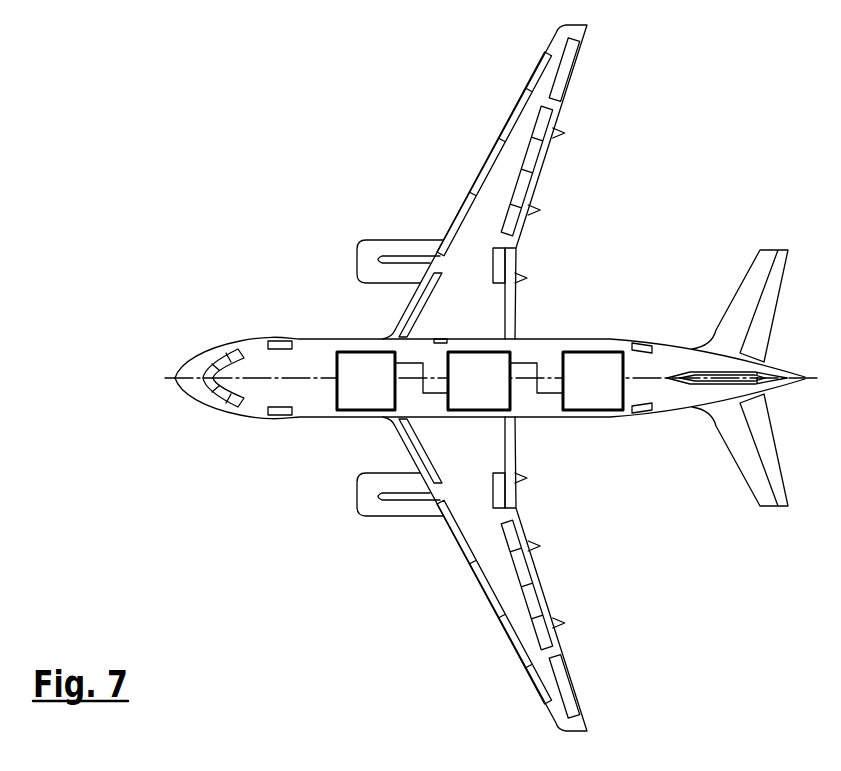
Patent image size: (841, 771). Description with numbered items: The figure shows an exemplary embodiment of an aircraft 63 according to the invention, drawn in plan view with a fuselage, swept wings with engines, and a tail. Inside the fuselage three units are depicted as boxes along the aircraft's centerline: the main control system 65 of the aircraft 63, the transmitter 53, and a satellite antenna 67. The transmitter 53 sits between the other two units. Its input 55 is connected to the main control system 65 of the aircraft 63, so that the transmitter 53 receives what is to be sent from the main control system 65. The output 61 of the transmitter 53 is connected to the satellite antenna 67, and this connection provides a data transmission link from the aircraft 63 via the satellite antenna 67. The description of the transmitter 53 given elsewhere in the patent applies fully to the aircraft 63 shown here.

The transmitter 53 is at (479, 381).
The input 55 is at (450, 410).
The output 61 is at (511, 352).
The aircraft 63 is at (312, 338).
The main control system 65 is at (366, 381).
The satellite antenna 67 is at (593, 381).